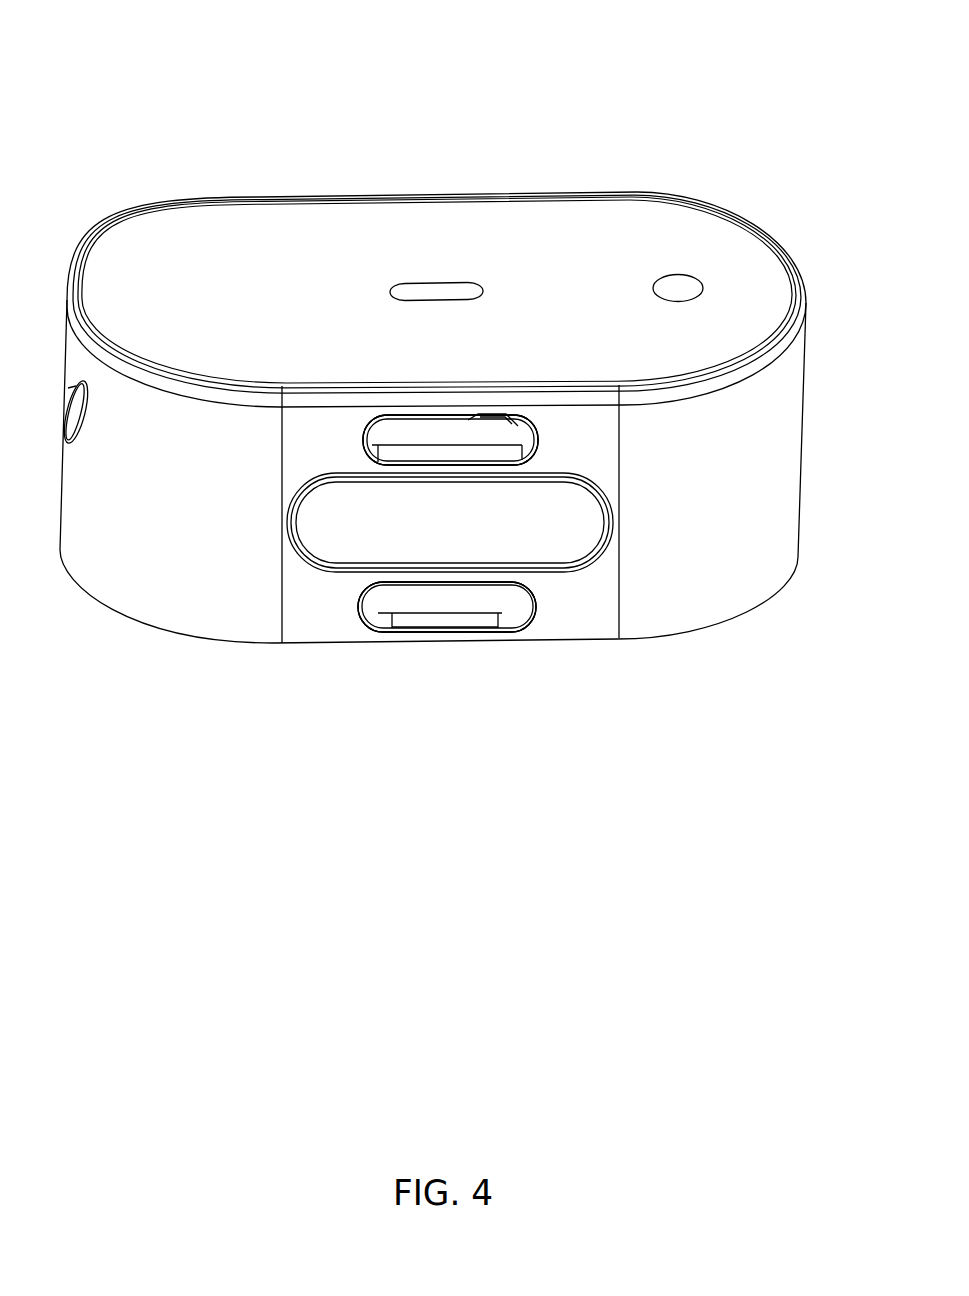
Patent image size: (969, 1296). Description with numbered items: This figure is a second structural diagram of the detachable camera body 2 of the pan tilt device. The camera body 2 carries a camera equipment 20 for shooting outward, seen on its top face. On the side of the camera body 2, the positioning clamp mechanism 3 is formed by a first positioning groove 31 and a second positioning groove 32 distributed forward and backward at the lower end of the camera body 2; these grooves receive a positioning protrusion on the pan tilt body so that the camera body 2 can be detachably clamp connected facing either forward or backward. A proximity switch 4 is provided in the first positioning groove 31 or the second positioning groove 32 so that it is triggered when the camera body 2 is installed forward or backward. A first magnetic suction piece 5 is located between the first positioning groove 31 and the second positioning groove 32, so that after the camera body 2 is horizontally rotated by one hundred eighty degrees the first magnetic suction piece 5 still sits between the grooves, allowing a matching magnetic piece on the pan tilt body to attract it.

The camera body 2 is at (138, 540).
The positioning clamp mechanism 3 is at (400, 430).
The first positioning groove 31 is at (399, 421).
The second positioning groove 32 is at (407, 421).
The camera equipment 20 is at (680, 290).
The proximity switch 4 is at (536, 423).
The first magnetic suction piece 5 is at (565, 517).